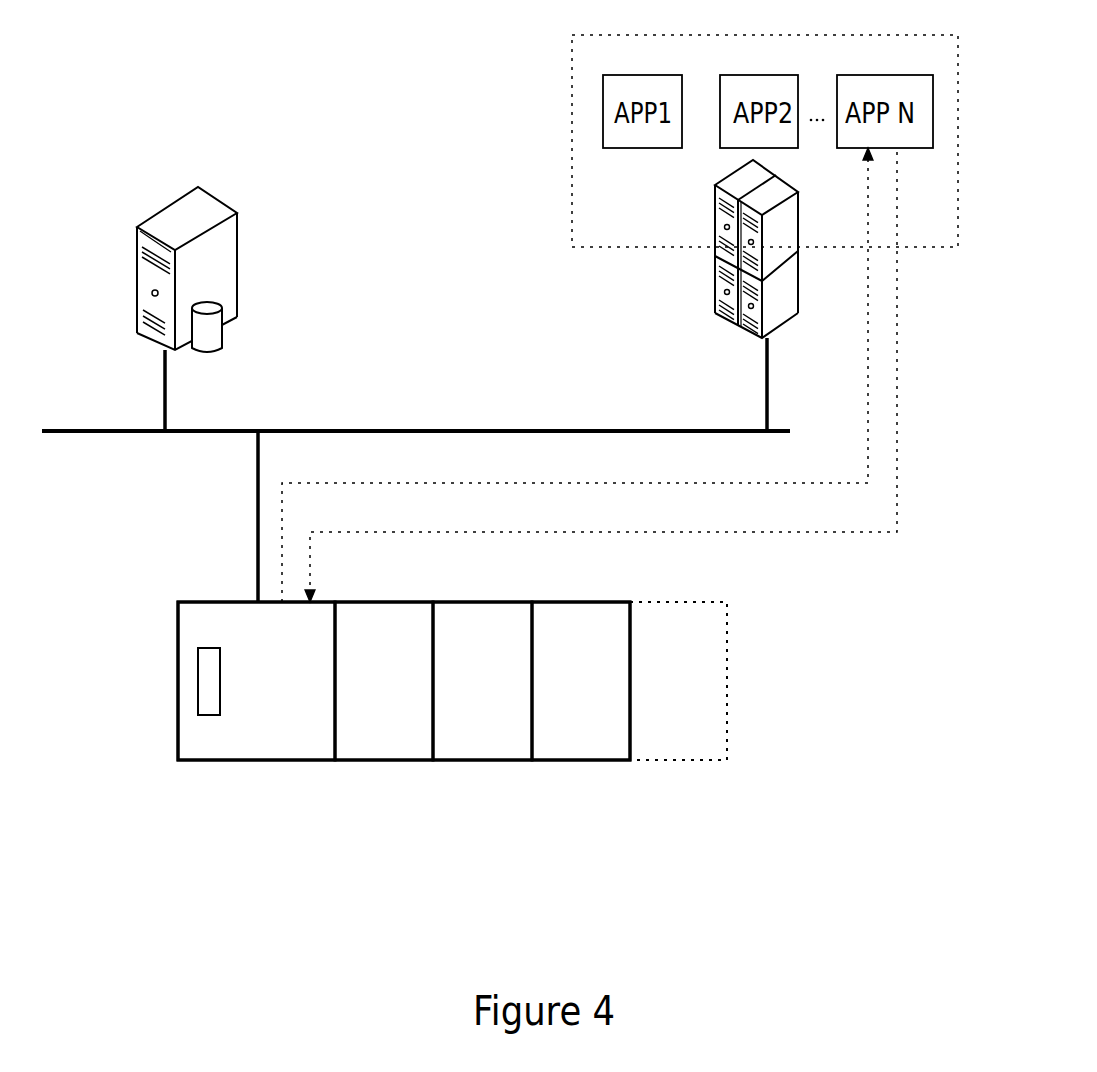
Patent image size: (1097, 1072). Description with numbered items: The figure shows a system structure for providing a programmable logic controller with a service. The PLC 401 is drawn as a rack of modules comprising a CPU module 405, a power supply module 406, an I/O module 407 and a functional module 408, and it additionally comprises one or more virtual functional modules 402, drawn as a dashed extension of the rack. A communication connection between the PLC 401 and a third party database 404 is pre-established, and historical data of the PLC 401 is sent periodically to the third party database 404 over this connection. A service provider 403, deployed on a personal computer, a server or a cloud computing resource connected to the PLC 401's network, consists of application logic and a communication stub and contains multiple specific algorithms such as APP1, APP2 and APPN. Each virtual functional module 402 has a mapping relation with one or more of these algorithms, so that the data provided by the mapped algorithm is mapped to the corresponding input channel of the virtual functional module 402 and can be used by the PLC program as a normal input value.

The PLC 401 is at (195, 633).
The virtual functional module 402 is at (678, 723).
The service provider 403 is at (712, 295).
The third party database 404 is at (178, 207).
The CPU module 405 is at (252, 737).
The power supply module 406 is at (382, 738).
The I/O module 407 is at (485, 742).
The functional module 408 is at (593, 738).